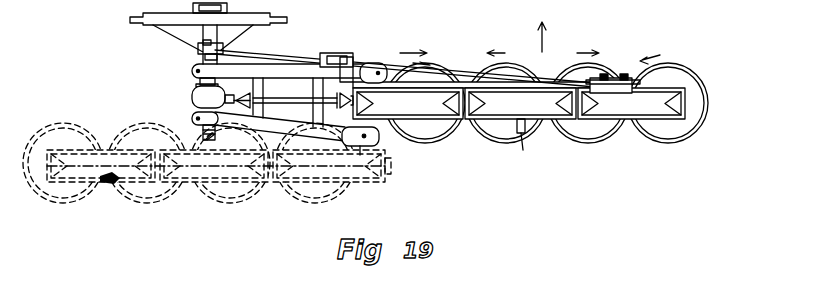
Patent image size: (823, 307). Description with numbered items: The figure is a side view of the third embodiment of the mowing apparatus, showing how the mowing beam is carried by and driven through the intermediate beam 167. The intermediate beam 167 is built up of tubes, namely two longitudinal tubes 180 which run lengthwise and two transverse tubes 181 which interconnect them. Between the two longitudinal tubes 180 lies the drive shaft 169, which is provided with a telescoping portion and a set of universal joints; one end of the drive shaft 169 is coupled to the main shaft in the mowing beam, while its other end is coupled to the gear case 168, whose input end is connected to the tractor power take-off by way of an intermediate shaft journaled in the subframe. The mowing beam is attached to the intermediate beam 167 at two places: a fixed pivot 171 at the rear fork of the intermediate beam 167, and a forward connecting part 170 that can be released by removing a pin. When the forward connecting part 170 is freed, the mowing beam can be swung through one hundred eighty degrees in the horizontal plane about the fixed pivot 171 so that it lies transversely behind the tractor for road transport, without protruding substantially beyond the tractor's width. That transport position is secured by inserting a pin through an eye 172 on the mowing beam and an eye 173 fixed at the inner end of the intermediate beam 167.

The intermediate beam 167 is at (283, 50).
The gear case 168 is at (192, 95).
The drive shaft 169 is at (278, 92).
The forward connecting part 170 is at (376, 64).
The fixed pivot 171 is at (379, 142).
The eye 172 is at (521, 134).
The eye 173 is at (196, 138).
The longitudinal tubes 180 is at (252, 67).
The transverse tubes 181 is at (313, 113).